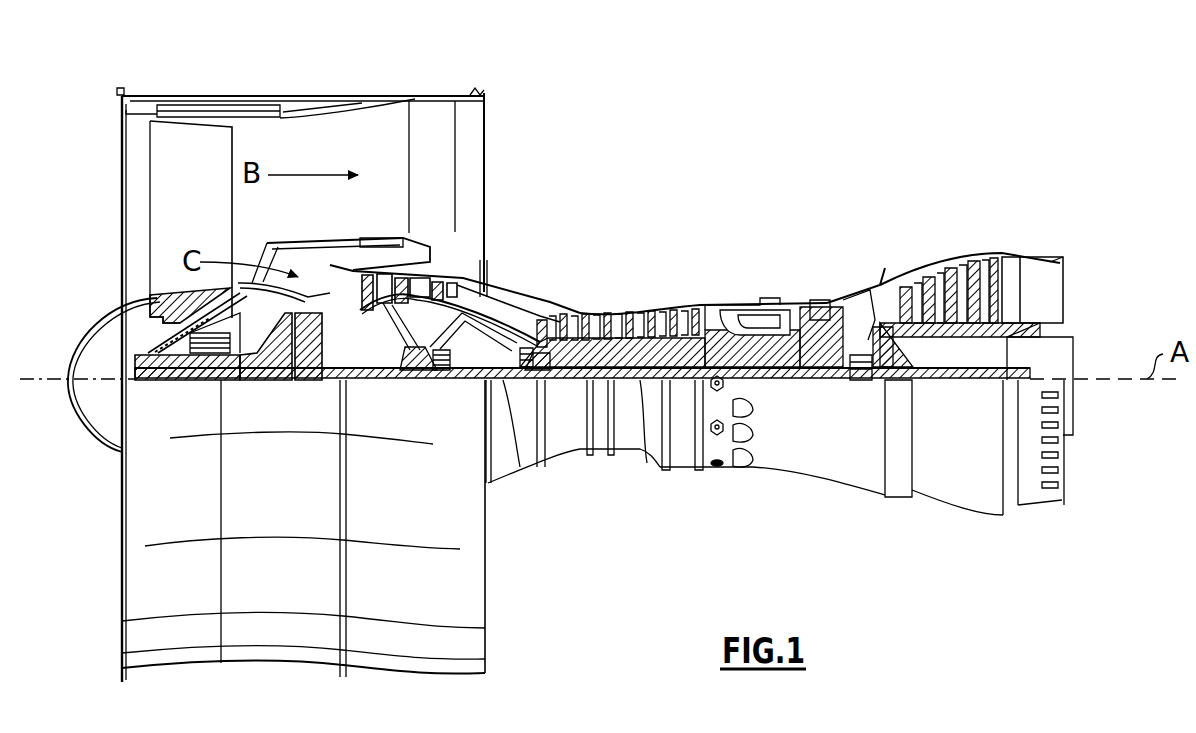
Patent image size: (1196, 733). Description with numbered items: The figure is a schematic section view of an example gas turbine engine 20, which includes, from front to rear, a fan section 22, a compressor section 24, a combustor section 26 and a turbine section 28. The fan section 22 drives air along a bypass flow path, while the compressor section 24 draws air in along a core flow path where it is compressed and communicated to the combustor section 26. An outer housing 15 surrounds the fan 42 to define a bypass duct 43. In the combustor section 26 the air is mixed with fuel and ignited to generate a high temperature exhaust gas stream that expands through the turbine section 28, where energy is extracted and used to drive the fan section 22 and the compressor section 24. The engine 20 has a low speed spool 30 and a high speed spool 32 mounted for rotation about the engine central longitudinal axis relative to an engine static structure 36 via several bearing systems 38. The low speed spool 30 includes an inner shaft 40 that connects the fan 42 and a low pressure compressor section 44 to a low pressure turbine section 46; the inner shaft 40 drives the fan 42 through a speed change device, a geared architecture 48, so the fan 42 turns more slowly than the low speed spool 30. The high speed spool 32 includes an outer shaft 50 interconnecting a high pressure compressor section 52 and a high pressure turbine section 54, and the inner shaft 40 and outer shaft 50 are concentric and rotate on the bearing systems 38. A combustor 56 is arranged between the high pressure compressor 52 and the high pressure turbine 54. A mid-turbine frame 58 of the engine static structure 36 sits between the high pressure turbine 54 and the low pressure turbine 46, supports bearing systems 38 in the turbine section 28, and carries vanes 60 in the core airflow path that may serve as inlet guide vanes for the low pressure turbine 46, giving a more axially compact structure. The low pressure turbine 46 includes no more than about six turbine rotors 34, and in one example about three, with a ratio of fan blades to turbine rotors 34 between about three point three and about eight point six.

The outer housing 15 is at (362, 98).
The gas turbine engine 20 is at (762, 146).
The fan section 22 is at (232, 88).
The compressor section 24 is at (535, 288).
The combustor section 26 is at (758, 274).
The turbine section 28 is at (906, 242).
The low speed spool 30 is at (643, 413).
The high speed spool 32 is at (677, 340).
The turbine rotors 34 is at (987, 333).
The engine static structure 36 is at (685, 452).
The bearing systems 38 is at (228, 380).
The inner shaft 40 is at (507, 457).
The fan 42 is at (204, 224).
The bypass duct 43 is at (430, 101).
The low pressure compressor section 44 is at (417, 282).
The low pressure turbine section 46 is at (950, 272).
The geared architecture 48 is at (307, 380).
The outer shaft 50 is at (768, 379).
The high pressure compressor section 52 is at (628, 308).
The high pressure turbine section 54 is at (817, 303).
The combustor 56 is at (757, 318).
The mid-turbine frame 58 is at (865, 285).
The vanes 60 is at (893, 337).